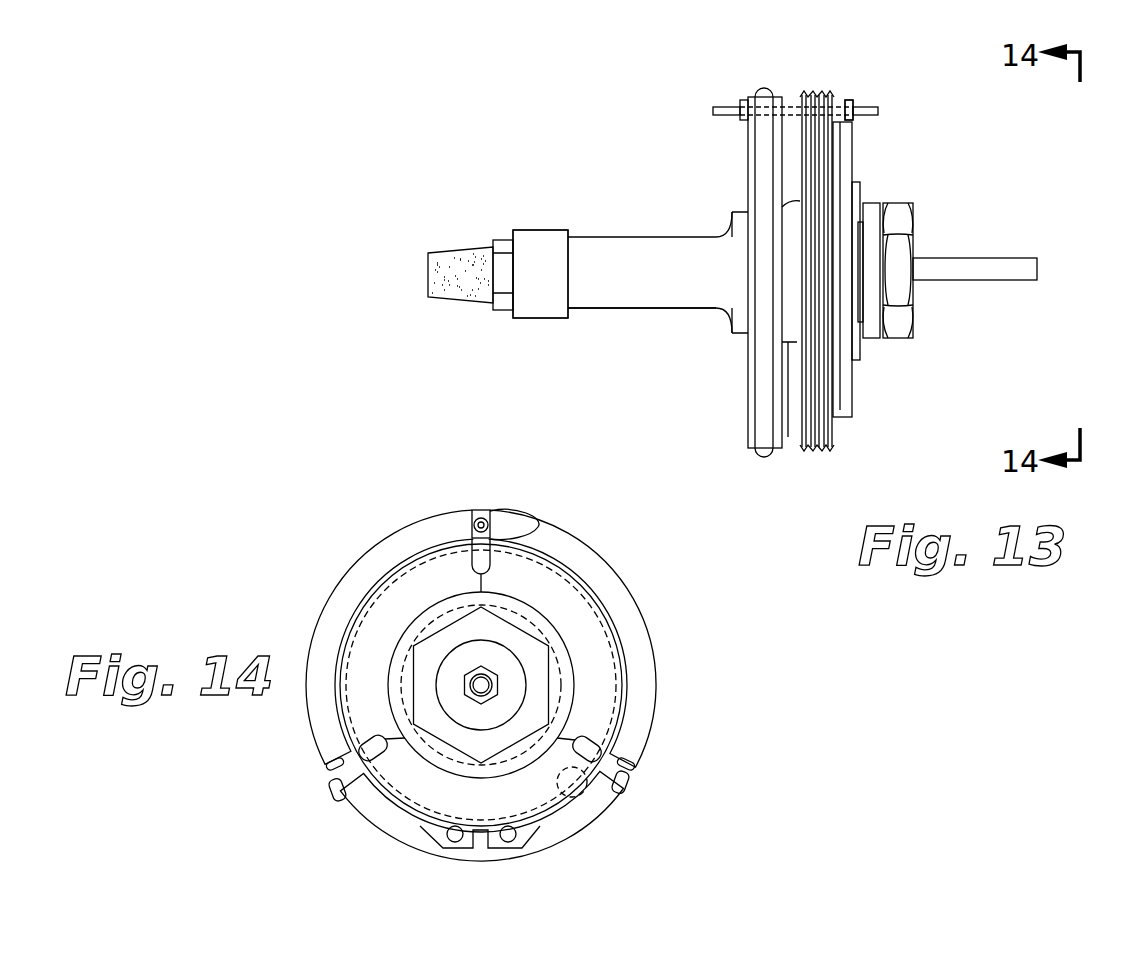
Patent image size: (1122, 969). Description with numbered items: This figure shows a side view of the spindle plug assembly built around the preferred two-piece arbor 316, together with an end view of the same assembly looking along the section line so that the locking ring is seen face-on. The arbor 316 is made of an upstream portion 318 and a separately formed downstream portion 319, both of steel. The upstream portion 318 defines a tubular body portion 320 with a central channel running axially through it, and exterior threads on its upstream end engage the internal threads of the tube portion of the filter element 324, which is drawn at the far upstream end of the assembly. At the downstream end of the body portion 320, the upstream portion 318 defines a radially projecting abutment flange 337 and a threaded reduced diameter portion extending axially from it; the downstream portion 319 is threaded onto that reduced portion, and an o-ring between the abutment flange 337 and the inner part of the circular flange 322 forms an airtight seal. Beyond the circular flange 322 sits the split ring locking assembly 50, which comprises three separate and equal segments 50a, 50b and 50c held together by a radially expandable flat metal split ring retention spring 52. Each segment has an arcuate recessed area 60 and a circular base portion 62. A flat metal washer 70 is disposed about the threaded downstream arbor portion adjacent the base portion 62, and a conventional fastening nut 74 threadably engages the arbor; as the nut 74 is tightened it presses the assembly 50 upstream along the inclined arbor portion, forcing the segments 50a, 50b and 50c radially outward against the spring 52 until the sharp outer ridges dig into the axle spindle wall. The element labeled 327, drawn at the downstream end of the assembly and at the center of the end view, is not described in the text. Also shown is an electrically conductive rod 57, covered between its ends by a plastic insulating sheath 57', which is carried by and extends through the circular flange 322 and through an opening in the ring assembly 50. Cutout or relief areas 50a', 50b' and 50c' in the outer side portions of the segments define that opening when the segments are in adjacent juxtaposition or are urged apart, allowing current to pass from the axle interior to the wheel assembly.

In FIG. 13, the split ring locking assembly 50 is at (837, 77).
In FIG. 14, the split ring locking assembly 50 is at (526, 693).
In FIG. 14, the ring segment 50a is at (389, 634).
In FIG. 14, the cutout or relief area 50a' is at (359, 615).
In FIG. 14, the ring segment 50b is at (618, 638).
In FIG. 14, the cutout or relief area 50b' is at (613, 596).
In FIG. 14, the ring segment 50c is at (478, 826).
In FIG. 14, the cutout or relief area 50c' is at (495, 817).
In FIG. 14, the split ring retention spring 52 is at (455, 847).
In FIG. 13, the electrically conductive rod 57 is at (838, 91).
In FIG. 14, the electrically conductive rod 57 is at (522, 502).
In FIG. 13, the insulating sheath 57' is at (909, 122).
In FIG. 14, the insulating sheath 57' is at (547, 491).
In FIG. 14, the arcuate recessed area 60 is at (590, 785).
In FIG. 14, the circular base portion 62 is at (598, 730).
In FIG. 14, the flat metal washer 70 is at (560, 630).
In FIG. 14, the fastening nut 74 is at (550, 674).
In FIG. 13, the arbor 316 is at (650, 186).
In FIG. 13, the upstream portion 318 is at (663, 310).
In FIG. 13, the downstream portion 319 is at (788, 437).
In FIG. 13, the tubular body portion 320 is at (627, 267).
In FIG. 13, the circular flange 322 is at (747, 143).
In FIG. 13, the filter element 324 is at (472, 257).
In FIG. 13, the drive shaft / nut 327 is at (977, 256).
In FIG. 14, the drive shaft / nut 327 is at (492, 695).
In FIG. 13, the abutment flange 337 is at (742, 212).